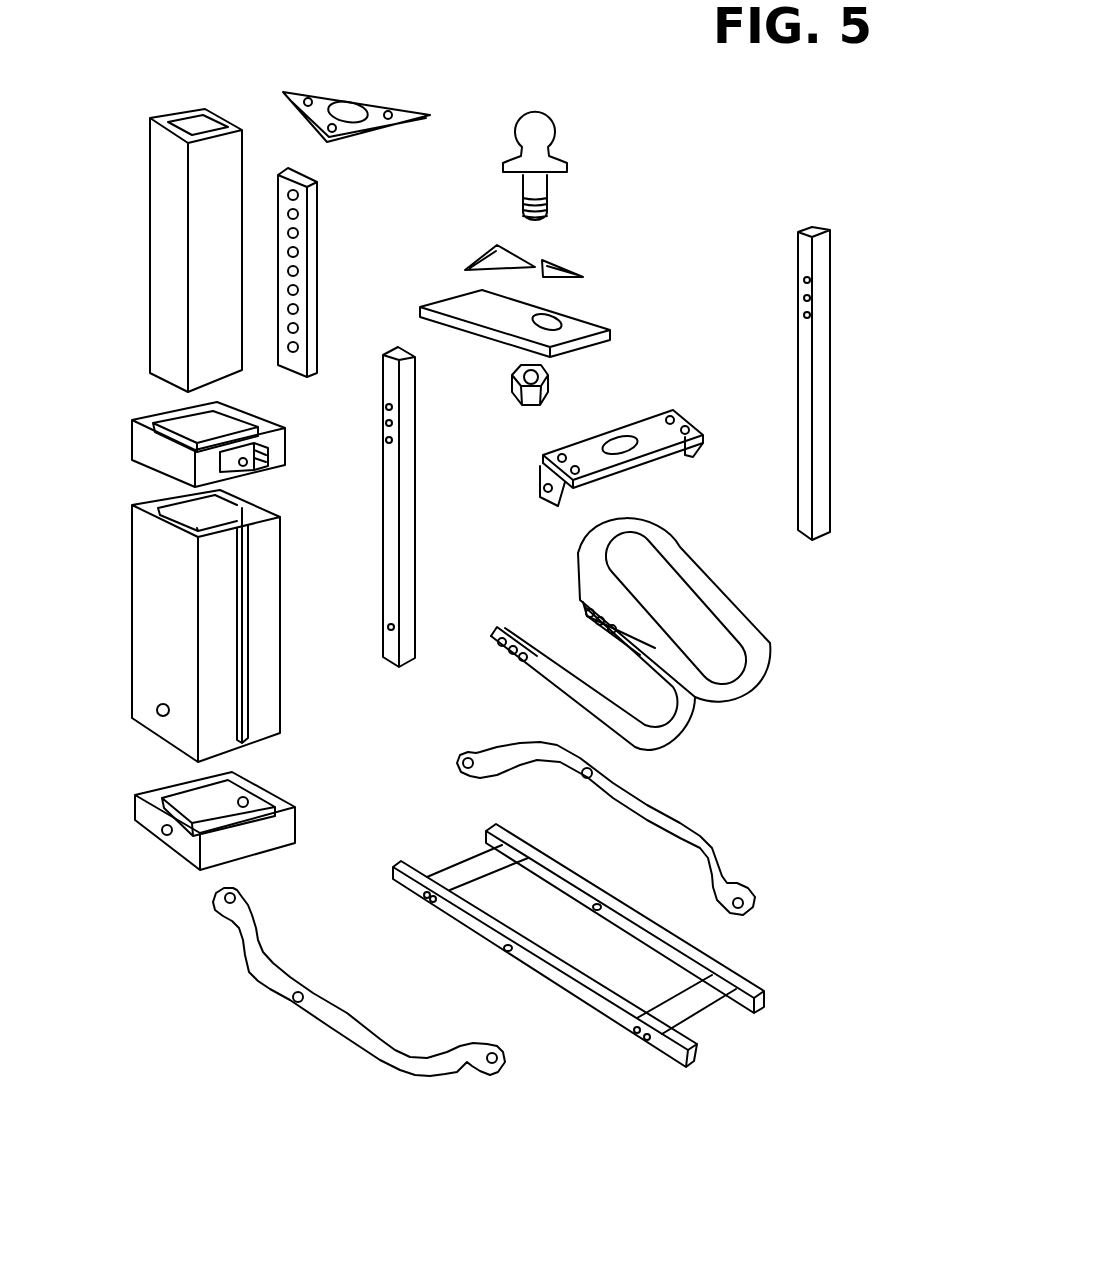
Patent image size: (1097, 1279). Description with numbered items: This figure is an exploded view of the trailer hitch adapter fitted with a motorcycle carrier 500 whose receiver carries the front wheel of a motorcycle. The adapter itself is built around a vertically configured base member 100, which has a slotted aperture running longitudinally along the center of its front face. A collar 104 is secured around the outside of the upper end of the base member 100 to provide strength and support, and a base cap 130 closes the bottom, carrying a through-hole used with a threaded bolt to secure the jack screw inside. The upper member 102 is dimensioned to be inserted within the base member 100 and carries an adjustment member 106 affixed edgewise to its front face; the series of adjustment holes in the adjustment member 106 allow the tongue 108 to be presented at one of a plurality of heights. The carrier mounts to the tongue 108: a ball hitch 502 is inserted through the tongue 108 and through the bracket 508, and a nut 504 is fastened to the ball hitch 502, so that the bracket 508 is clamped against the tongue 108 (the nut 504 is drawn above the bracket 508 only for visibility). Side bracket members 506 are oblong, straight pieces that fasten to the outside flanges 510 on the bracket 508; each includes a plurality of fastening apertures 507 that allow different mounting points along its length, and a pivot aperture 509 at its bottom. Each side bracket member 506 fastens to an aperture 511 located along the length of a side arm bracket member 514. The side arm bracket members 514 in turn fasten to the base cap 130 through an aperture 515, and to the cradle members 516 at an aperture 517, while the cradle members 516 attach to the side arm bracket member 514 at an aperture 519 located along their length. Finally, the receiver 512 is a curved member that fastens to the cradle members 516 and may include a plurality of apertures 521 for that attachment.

The base member 100 is at (165, 613).
The upper member 102 is at (165, 227).
The collar 104 is at (165, 452).
The adjustment member 106 is at (313, 253).
The tongue 108 is at (507, 310).
The base cap 130 is at (150, 818).
The motorcycle carrier 500 is at (771, 689).
The ball hitch 502 is at (537, 140).
The nut 504 is at (540, 400).
The side bracket member 506 is at (398, 347).
The fastening apertures 507 is at (390, 442).
The bracket 508 is at (630, 467).
The pivot aperture 509 is at (390, 627).
The outside flanges 510 is at (557, 503).
The aperture 511 is at (295, 1003).
The receiver 512 is at (695, 697).
The side arm bracket member 514 is at (255, 958).
The aperture 515 is at (230, 907).
The cradle member 516 is at (403, 866).
The aperture 517 is at (490, 1052).
The aperture 519 is at (597, 907).
The apertures 521 is at (552, 590).